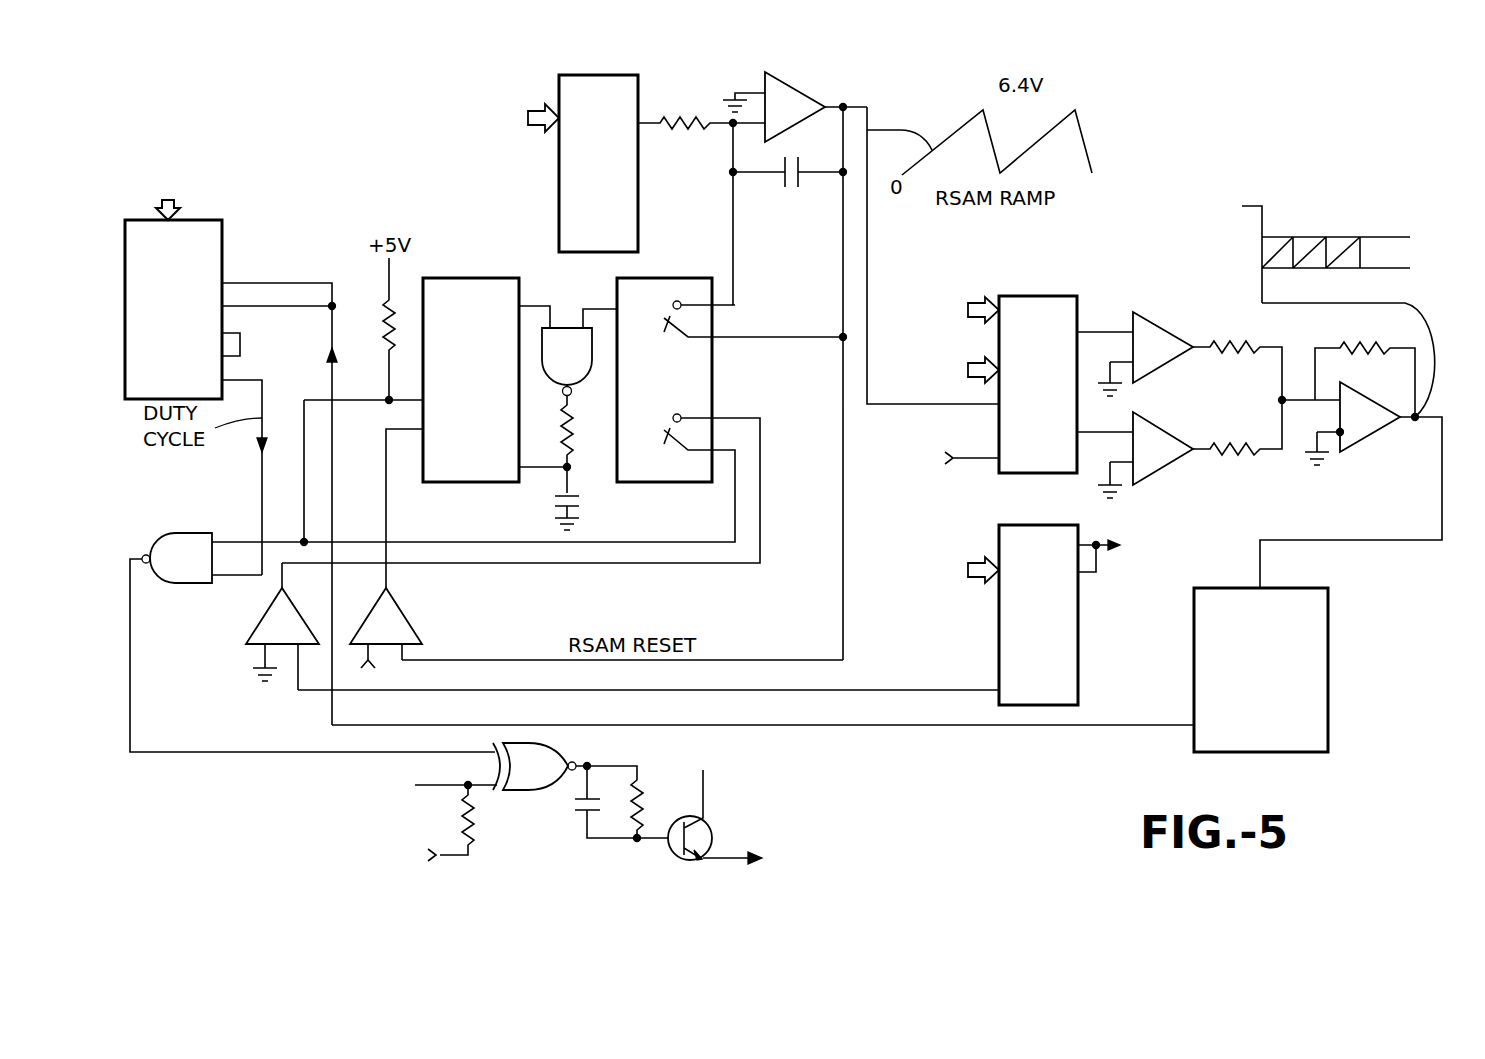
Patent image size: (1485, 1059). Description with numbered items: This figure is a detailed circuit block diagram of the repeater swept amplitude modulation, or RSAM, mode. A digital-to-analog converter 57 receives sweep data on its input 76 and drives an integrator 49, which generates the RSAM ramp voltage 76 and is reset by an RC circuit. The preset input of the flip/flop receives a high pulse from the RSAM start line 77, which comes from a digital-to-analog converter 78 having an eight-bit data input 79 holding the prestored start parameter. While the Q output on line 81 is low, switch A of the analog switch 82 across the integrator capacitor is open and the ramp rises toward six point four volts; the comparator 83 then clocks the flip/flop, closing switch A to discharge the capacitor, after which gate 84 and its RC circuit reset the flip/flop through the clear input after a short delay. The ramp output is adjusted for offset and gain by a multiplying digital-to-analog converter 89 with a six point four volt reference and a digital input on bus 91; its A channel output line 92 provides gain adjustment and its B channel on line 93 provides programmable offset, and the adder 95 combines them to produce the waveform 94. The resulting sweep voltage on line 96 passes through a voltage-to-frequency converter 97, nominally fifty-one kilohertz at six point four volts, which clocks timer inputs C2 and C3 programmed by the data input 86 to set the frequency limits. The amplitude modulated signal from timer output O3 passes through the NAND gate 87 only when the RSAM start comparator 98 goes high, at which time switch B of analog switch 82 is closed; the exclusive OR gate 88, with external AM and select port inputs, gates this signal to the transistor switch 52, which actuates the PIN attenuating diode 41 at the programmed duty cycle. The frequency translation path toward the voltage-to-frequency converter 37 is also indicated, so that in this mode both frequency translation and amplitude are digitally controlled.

The data input 86 is at (182, 198).
The RSAM ramp voltage 76 is at (950, 140).
The digital-to-analog converter 57 is at (559, 190).
The integrator 49 is at (790, 188).
The Q output line 81 is at (537, 306).
The analog switch 82 is at (660, 278).
The gate 84 is at (565, 330).
The NAND gate 87 is at (190, 583).
The RSAM start comparator 98 is at (252, 622).
The comparator 83 is at (398, 608).
The RSAM start line 77 is at (478, 690).
The exclusive OR gate 88 is at (548, 757).
The transistor switch 52 is at (705, 830).
The PIN attenuating diode 41 is at (891, 859).
The multiplying digital-to-analog converter 89 is at (1045, 296).
The bus 91 is at (975, 300).
The A channel output line 92 is at (1093, 332).
The B channel line 93 is at (1100, 440).
The waveform 94 is at (1268, 250).
The adder 95 is at (1360, 428).
The sweep voltage line 96 is at (1442, 510).
The voltage-to-frequency converter 97 is at (1328, 668).
The 8-bit data input 79 is at (975, 560).
The digital-to-analog converter 78 is at (999, 625).
The voltage-to-frequency converter 37 is at (1145, 554).